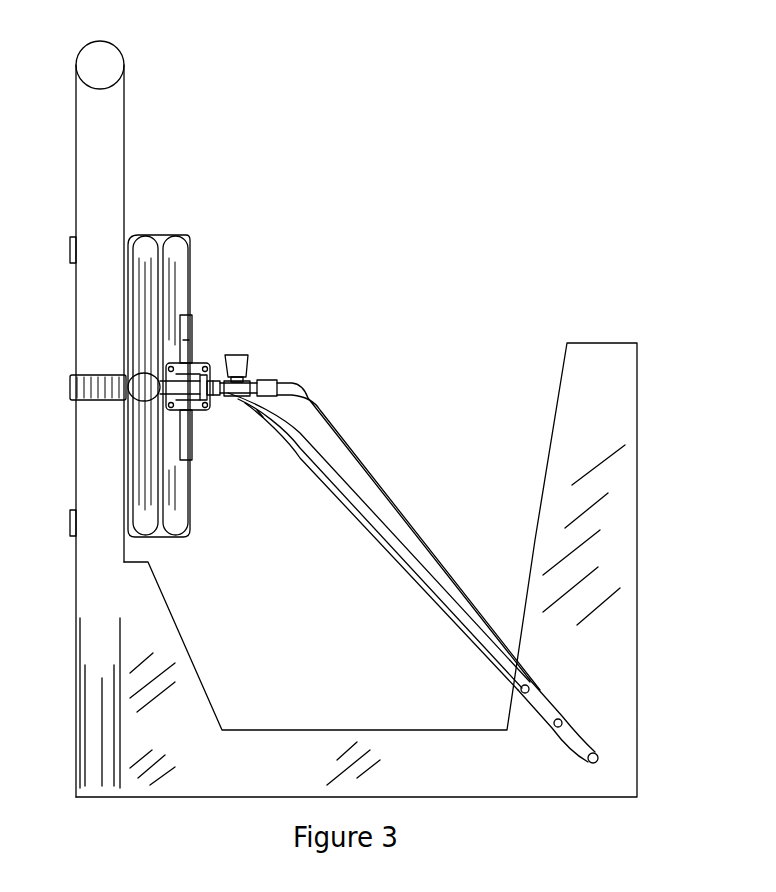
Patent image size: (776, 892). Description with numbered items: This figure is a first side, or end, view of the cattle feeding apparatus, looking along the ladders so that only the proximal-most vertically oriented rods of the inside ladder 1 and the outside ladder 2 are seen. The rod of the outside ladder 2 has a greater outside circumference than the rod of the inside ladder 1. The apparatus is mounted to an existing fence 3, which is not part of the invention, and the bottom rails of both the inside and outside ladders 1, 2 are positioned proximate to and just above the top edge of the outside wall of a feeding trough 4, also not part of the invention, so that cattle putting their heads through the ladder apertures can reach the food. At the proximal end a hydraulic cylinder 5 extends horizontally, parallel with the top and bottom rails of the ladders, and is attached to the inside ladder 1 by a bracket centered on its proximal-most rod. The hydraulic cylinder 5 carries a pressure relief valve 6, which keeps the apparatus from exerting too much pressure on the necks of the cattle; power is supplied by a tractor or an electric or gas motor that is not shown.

The inside ladder 1 is at (173, 312).
The outside ladder 2 is at (142, 302).
The fence 3 is at (95, 70).
The feeding trough 4 is at (603, 692).
The hydraulic cylinder 5 is at (222, 348).
The pressure relief valve 6 is at (240, 363).